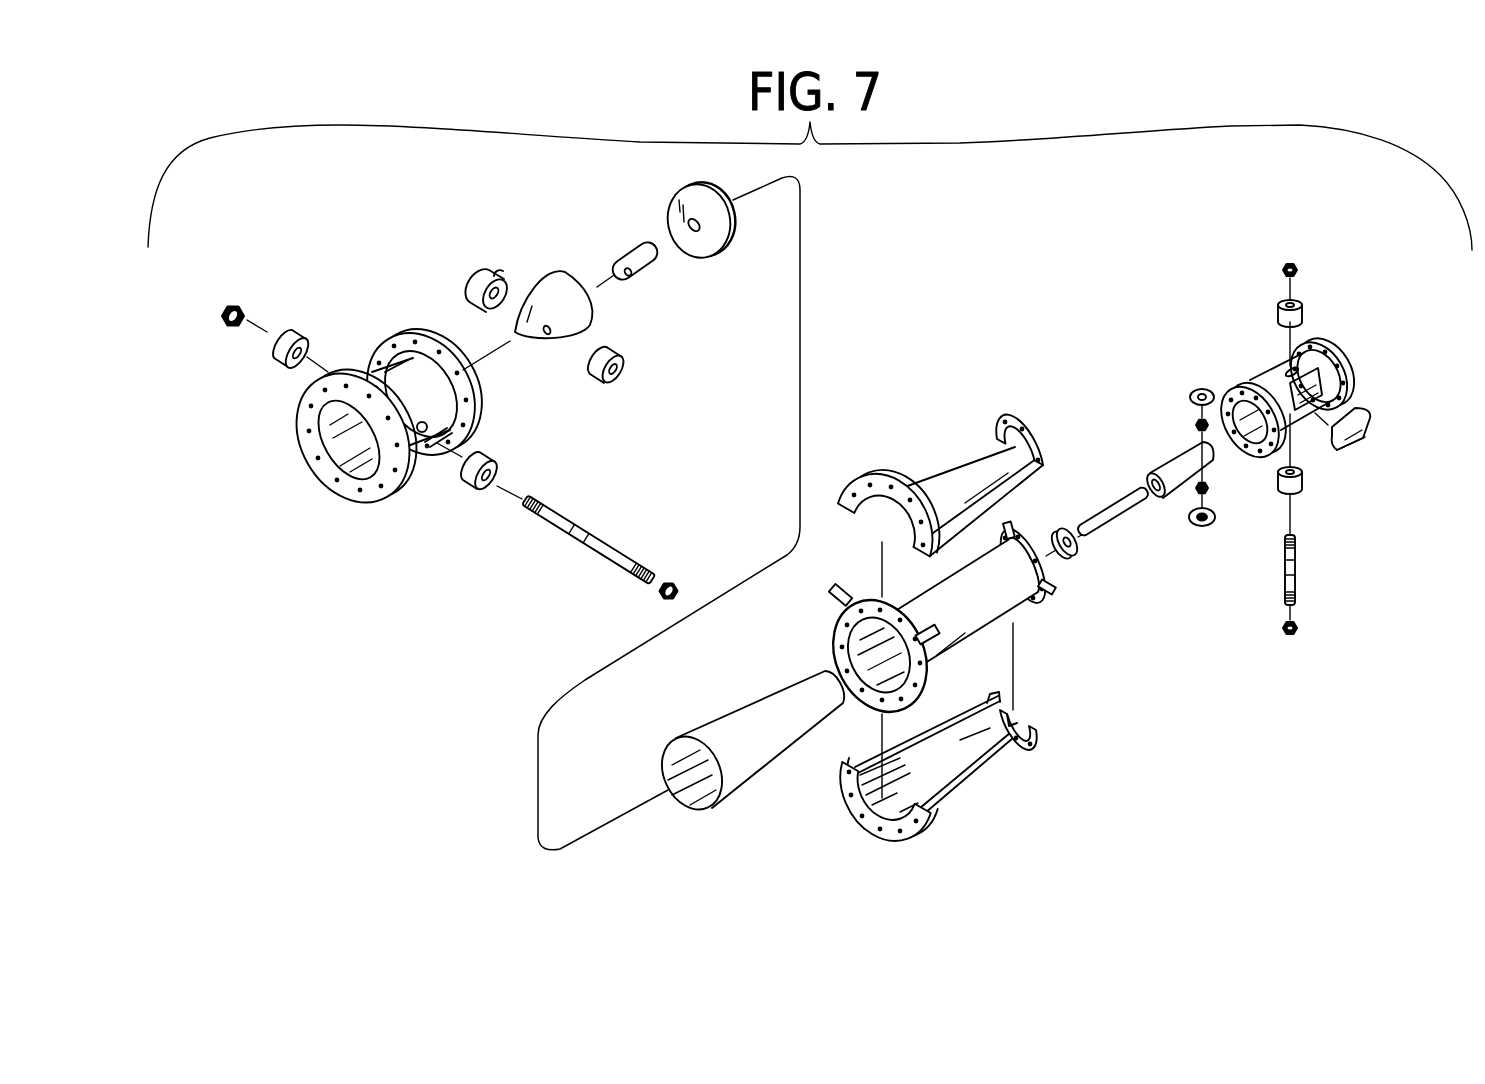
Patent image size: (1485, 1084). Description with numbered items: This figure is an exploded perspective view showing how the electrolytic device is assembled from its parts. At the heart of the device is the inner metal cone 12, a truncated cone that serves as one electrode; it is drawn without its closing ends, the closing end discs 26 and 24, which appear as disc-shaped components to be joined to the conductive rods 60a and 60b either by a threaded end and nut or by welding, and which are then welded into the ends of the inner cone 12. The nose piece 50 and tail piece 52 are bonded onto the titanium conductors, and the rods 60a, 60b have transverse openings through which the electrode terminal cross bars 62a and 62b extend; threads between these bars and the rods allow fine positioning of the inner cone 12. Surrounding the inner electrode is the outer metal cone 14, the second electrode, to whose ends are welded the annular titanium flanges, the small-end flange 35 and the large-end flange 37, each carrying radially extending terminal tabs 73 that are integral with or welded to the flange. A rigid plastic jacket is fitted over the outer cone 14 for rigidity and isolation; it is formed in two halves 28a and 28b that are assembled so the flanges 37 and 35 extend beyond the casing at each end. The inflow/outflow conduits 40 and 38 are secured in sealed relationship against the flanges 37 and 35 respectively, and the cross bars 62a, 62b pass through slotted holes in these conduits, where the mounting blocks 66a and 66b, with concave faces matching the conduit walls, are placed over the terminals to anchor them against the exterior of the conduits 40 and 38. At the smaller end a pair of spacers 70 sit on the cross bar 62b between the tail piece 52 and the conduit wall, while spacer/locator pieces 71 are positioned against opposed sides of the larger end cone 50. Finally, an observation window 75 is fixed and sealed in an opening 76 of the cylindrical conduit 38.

The inner metal cone 12 is at (750, 767).
The outer metal cone 14 is at (969, 551).
The closing end disc 24 is at (1083, 552).
The closing end disc 26 is at (703, 250).
The jacket half 28a is at (930, 488).
The jacket half 28b is at (947, 790).
The small-end flange 35 is at (1040, 550).
The large-end flange 37 is at (858, 698).
The inflow/outflow conduit 38 is at (1309, 427).
The inflow/outflow conduit 40 is at (364, 516).
The nose piece 50 is at (544, 271).
The tail piece 52 is at (1218, 458).
The conductive rod 60a is at (641, 246).
The conductive rod 60b is at (1118, 498).
The electrode terminal cross bar 62a is at (610, 563).
The electrode terminal cross bar 62b is at (1298, 603).
The mounting block 66a is at (278, 330).
The mounting block 66b is at (1272, 310).
The spacer 70 is at (1187, 420).
The spacer/locator piece 71 is at (486, 270).
The terminal tab 73 is at (850, 587).
The observation window 75 is at (1362, 443).
The opening 76 is at (1312, 422).